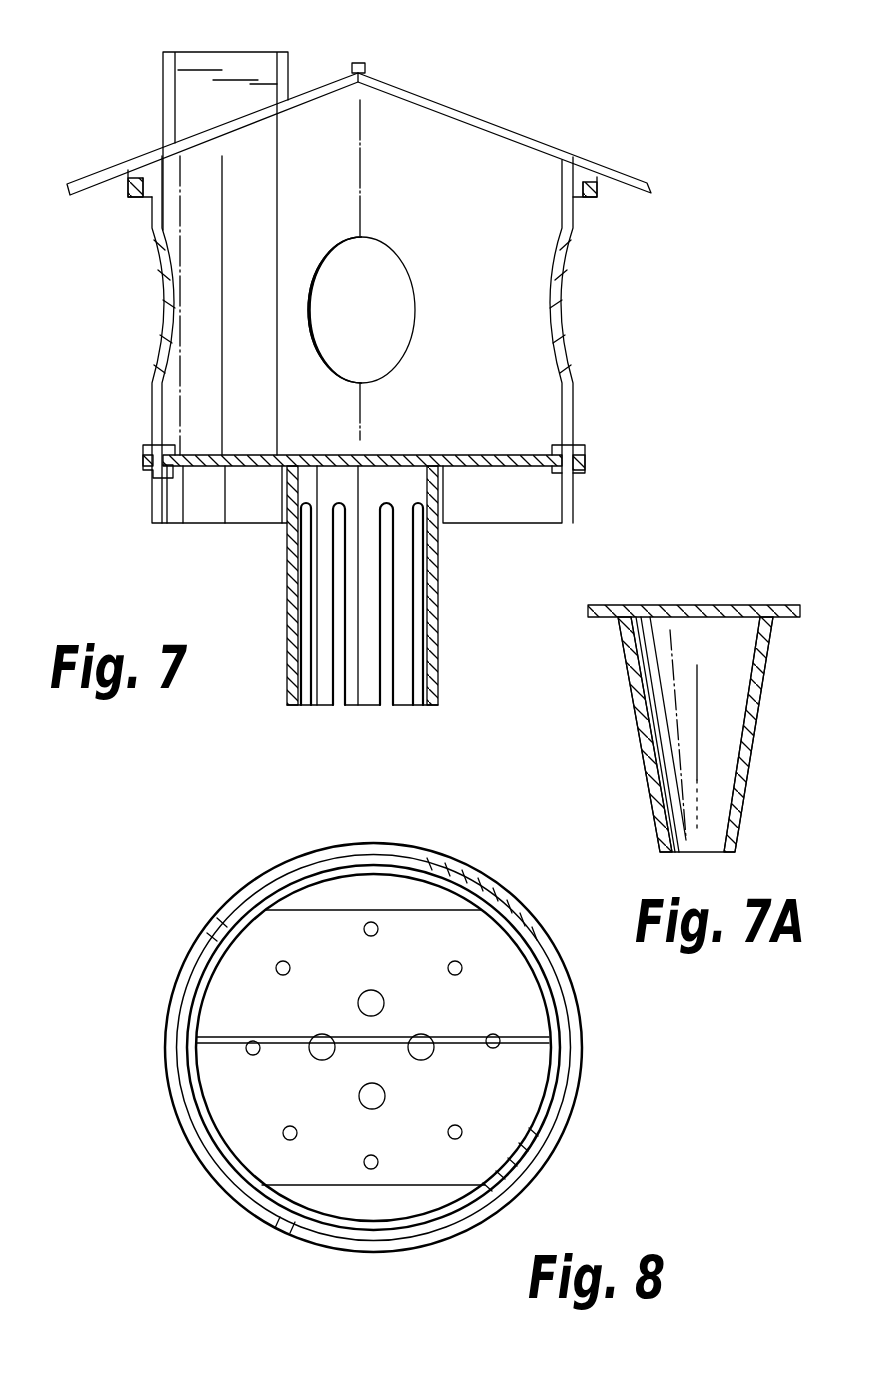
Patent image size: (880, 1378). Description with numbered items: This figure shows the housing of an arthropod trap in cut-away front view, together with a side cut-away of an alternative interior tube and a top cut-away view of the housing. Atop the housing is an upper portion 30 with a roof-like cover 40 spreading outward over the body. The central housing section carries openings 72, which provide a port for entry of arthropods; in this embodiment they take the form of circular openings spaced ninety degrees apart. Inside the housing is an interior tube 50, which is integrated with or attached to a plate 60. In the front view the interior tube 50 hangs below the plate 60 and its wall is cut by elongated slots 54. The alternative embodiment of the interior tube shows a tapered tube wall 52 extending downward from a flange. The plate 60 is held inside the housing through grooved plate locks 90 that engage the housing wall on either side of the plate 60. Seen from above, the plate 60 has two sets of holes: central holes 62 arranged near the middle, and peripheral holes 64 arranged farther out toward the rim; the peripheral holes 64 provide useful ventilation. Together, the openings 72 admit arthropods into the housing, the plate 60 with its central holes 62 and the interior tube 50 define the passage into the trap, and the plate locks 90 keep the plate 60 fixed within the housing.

In FIG. 7, the inlet tube 30 is at (292, 72).
In FIG. 7, the hood cover 40 is at (557, 145).
In FIG. 7, the opening 72 is at (402, 318).
In FIG. 7, the grooved plate lock 90 is at (165, 440).
In FIG. 7, the plate 60 is at (205, 467).
In FIG. 8, the plate 60 is at (428, 935).
In FIG. 7, the slots 54 is at (340, 587).
In FIG. 7, the interior tube 50 is at (440, 630).
In FIG. 7A, the tapered tube wall 52 is at (641, 727).
In FIG. 8, the central hole 62 is at (385, 1090).
In FIG. 8, the peripheral hole 64 is at (283, 1133).